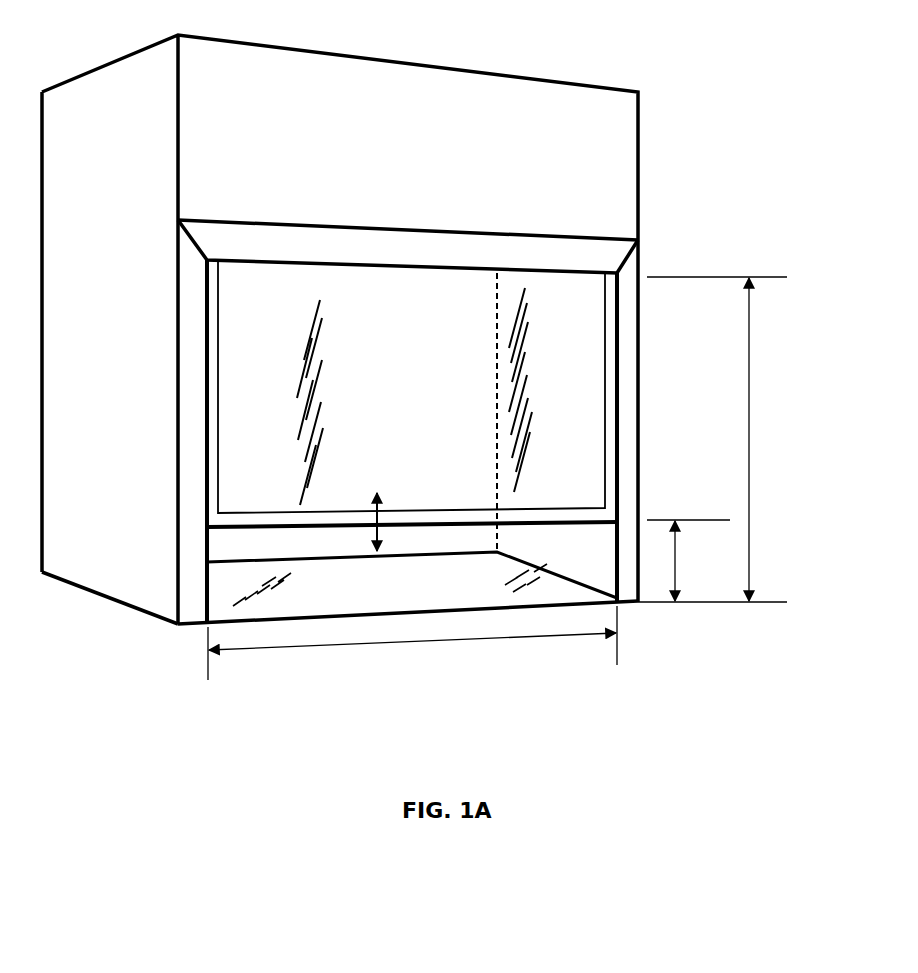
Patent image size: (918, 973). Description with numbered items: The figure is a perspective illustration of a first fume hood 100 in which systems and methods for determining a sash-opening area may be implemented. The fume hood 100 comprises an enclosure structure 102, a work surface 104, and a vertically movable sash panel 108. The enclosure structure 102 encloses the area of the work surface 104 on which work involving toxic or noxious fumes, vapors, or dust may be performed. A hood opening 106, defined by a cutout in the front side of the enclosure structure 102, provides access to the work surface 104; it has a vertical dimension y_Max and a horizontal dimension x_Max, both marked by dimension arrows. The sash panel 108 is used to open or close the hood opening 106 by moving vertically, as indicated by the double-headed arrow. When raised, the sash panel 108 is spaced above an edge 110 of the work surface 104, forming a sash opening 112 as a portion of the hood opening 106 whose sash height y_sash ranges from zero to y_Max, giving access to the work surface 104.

The first fume hood 100 is at (474, 45).
The enclosure structure 102 is at (640, 114).
The work surface 104 is at (390, 597).
The hood opening 106 is at (199, 605).
The vertically movable sash panel 108 is at (452, 347).
The edge of the work surface 110 is at (552, 601).
The sash opening 112 is at (215, 578).